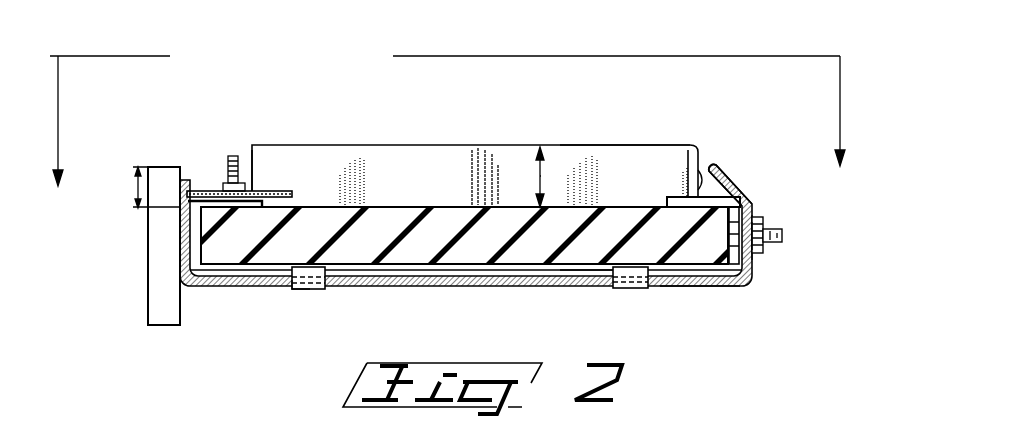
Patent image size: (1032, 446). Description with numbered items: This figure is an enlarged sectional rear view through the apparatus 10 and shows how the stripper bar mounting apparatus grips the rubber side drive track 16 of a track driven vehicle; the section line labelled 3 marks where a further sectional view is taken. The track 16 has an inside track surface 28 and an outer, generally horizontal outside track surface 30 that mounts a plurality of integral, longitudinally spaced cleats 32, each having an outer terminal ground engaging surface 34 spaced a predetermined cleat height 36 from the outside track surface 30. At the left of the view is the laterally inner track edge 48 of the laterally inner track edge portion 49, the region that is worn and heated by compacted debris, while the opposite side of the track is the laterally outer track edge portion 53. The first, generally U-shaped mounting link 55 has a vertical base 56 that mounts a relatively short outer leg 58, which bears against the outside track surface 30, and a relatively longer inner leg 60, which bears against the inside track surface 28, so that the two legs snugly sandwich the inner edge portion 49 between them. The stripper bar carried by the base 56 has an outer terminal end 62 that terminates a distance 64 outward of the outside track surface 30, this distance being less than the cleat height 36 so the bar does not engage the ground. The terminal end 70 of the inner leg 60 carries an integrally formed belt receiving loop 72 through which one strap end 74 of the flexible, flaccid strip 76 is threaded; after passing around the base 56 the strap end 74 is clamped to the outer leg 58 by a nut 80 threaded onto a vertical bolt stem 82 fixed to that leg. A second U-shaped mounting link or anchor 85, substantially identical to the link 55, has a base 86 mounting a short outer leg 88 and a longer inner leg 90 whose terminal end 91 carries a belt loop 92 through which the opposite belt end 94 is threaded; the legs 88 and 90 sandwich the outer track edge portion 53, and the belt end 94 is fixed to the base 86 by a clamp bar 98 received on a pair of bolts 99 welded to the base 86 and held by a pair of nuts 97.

The section line 3- 3 is at (444, 107).
The apparatus 10 is at (672, 84).
The side drive track 16 is at (712, 243).
The inside track surface 28 is at (462, 263).
The outside track surface 30 is at (420, 207).
The cleat 32 is at (373, 185).
The ground engaging surface 34 is at (600, 150).
The cleat height 36 is at (543, 175).
The laterally inner track edge 48 is at (180, 222).
The laterally inner track edge portion 49 is at (207, 257).
The laterally outer track edge portion 53 is at (748, 250).
The first U-shaped mounting link 55 is at (190, 343).
The vertical base 56 is at (180, 197).
The outer leg 58 is at (269, 192).
The inner leg 60 is at (233, 283).
The outer terminal end 62 is at (145, 167).
The distance 64 is at (136, 186).
The terminal end 70 is at (340, 288).
The belt receiving loop 72 is at (294, 289).
The strap end 74 is at (252, 187).
The flexible strip 76 is at (423, 283).
The nut 80 is at (224, 184).
The bolt stem 82 is at (234, 156).
The second U-shaped mounting link 85 is at (758, 194).
The base 86 is at (762, 252).
The outer leg 88 is at (688, 143).
The inner leg 90 is at (687, 282).
The terminal end 91 is at (588, 270).
The belt loop 92 is at (620, 290).
The belt end 94 is at (723, 168).
The nut 97 is at (767, 245).
The clamp bar 98 is at (757, 248).
The bolt 99 is at (777, 219).